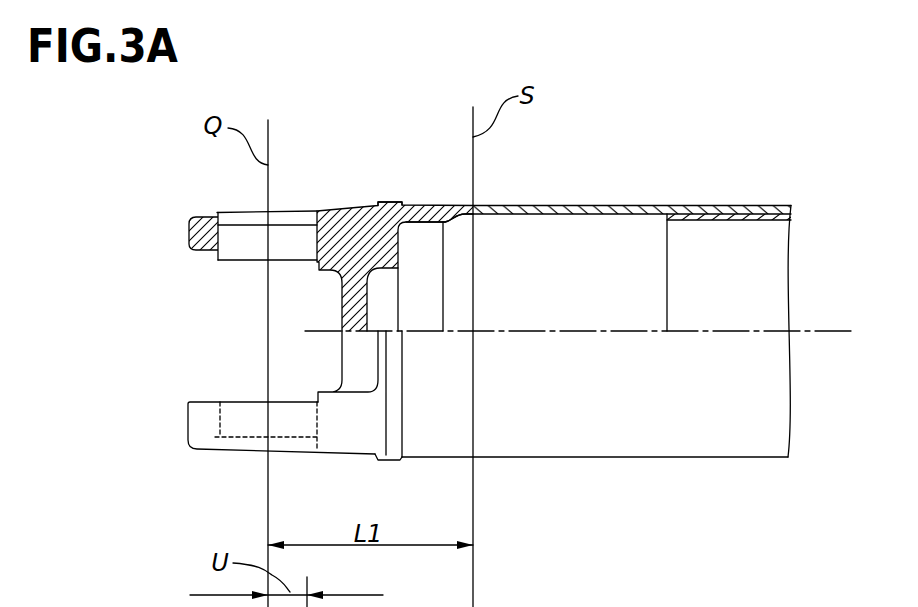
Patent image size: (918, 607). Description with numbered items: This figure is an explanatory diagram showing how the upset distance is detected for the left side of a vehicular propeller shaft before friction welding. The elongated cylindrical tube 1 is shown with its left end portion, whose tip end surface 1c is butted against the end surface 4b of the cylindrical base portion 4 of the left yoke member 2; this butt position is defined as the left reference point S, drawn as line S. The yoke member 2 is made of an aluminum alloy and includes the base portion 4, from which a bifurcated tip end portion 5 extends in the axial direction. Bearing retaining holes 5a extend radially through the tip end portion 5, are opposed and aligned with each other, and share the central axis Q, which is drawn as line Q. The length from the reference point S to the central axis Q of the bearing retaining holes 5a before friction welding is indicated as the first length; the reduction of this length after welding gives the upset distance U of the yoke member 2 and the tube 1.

The tube 1 is at (565, 206).
The tip end surface 1c is at (465, 206).
The yoke member 2 is at (349, 200).
The base portion 4 is at (388, 206).
The end surface 4b is at (480, 212).
The tip end portion 5 is at (203, 230).
The bearing retaining hole 5a is at (285, 237).